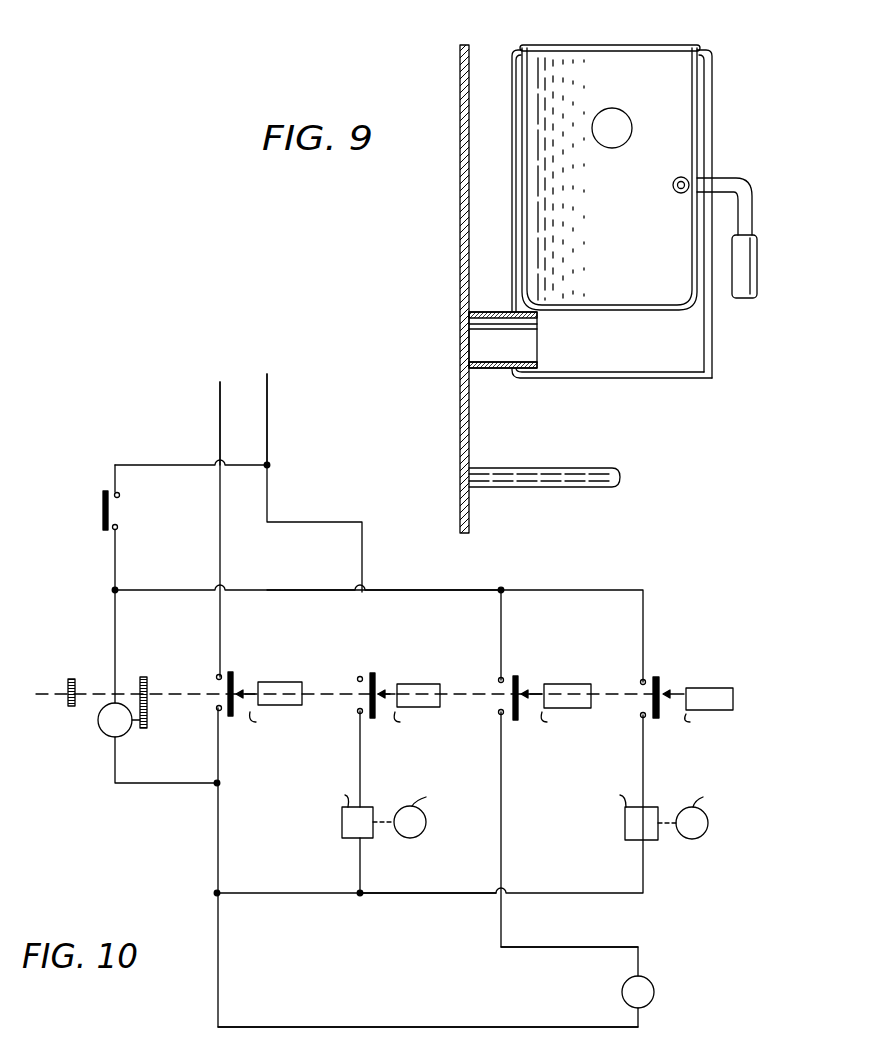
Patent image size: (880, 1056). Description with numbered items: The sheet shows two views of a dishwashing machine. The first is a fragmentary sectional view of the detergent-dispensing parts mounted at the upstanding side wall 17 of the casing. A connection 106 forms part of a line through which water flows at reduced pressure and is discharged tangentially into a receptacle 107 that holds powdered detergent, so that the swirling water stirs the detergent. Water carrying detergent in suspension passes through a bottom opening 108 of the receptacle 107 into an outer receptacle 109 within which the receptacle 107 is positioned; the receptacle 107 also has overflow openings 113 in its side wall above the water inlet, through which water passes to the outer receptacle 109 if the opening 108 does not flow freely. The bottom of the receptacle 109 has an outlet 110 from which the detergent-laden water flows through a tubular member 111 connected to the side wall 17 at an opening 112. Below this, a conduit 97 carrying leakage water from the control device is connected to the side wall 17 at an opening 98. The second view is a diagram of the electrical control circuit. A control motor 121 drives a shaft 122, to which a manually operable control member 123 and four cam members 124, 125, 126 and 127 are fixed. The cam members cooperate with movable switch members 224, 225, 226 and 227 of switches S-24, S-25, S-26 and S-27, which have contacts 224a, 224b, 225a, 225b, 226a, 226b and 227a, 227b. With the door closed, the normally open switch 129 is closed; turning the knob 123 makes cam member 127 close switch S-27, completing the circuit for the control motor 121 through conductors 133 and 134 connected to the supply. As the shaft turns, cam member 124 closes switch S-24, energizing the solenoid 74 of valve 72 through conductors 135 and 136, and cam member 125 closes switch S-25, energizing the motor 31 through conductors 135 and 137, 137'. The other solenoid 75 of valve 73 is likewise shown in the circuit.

In FIG. 9, the side wall 17 is at (470, 166).
In FIG. 9, the conduit 97 is at (549, 488).
In FIG. 9, the opening 98 is at (460, 468).
In FIG. 9, the connection 106 is at (736, 178).
In FIG. 9, the receptacle 107 is at (571, 309).
In FIG. 9, the bottom opening 108 is at (606, 305).
In FIG. 9, the receptacle 109 is at (514, 258).
In FIG. 9, the outlet 110 is at (516, 375).
In FIG. 9, the tubular member 111 is at (498, 312).
In FIG. 9, the opening 112 is at (460, 312).
In FIG. 9, the openings 113 is at (693, 122).
In FIG. 10, the motor 31 is at (655, 991).
In FIG. 10, the valve 72 is at (705, 836).
In FIG. 10, the valve 73 is at (405, 838).
In FIG. 10, the solenoid 74 is at (625, 837).
In FIG. 10, the solenoid 75 is at (342, 840).
In FIG. 10, the control motor 121 is at (103, 728).
In FIG. 10, the shaft 122 is at (148, 684).
In FIG. 10, the manually operable control member 123 is at (70, 682).
In FIG. 10, the cam member 124 is at (715, 688).
In FIG. 10, the cam member 125 is at (570, 684).
In FIG. 10, the cam member 126 is at (418, 684).
In FIG. 10, the cam member 127 is at (278, 682).
In FIG. 10, the switch 129 is at (103, 508).
In FIG. 10, the conductor 133 is at (220, 422).
In FIG. 10, the conductor 134 is at (268, 418).
In FIG. 10, the conductor 135 is at (460, 592).
In FIG. 10, the conductor 136 is at (452, 894).
In FIG. 10, the conductor 137 is at (569, 932).
In FIG. 10, the conductor 137' is at (428, 1016).
In FIG. 10, the switch member 224 is at (661, 677).
In FIG. 10, the contact 224a is at (644, 679).
In FIG. 10, the contact 224b is at (645, 718).
In FIG. 10, the switch member 225 is at (520, 676).
In FIG. 10, the contact 225a is at (502, 677).
In FIG. 10, the contact 225b is at (502, 715).
In FIG. 10, the switch member 226 is at (377, 673).
In FIG. 10, the contact 226a is at (361, 676).
In FIG. 10, the contact 226b is at (361, 714).
In FIG. 10, the switch member 227 is at (235, 672).
In FIG. 10, the contact 227a is at (219, 674).
In FIG. 10, the contact 227b is at (221, 712).
In FIG. 10, the switch S-24 is at (641, 716).
In FIG. 10, the switch S-25 is at (497, 712).
In FIG. 10, the switch S-26 is at (357, 711).
In FIG. 10, the switch S-27 is at (214, 709).